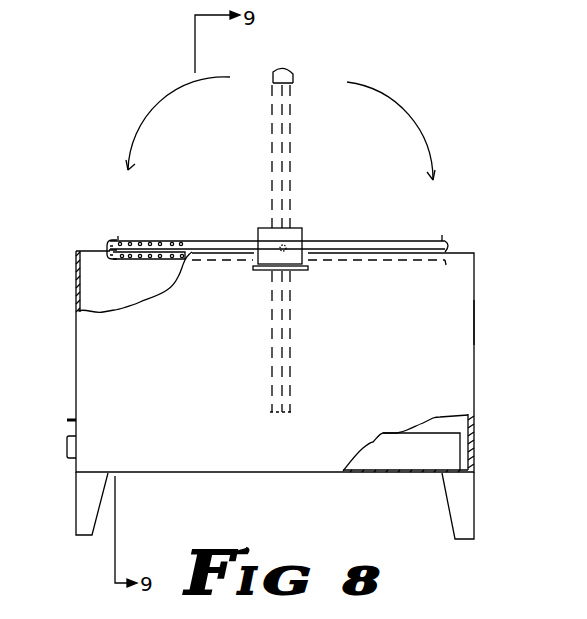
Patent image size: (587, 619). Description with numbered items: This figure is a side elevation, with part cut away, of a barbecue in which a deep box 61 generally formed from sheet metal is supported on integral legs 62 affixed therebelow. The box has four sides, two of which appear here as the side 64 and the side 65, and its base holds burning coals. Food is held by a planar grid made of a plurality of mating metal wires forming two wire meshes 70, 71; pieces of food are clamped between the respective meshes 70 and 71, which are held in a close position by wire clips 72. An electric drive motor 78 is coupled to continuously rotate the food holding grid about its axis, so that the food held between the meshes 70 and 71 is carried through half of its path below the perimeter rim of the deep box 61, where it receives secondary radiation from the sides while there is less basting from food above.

The deep box 61 is at (462, 377).
The legs 62 is at (97, 487).
The side 64 is at (330, 414).
The side 65 is at (477, 327).
The wire mesh 70 is at (155, 241).
The wire mesh 71 is at (146, 259).
The wire clips 72 is at (110, 243).
The electric drive motor 78 is at (286, 247).